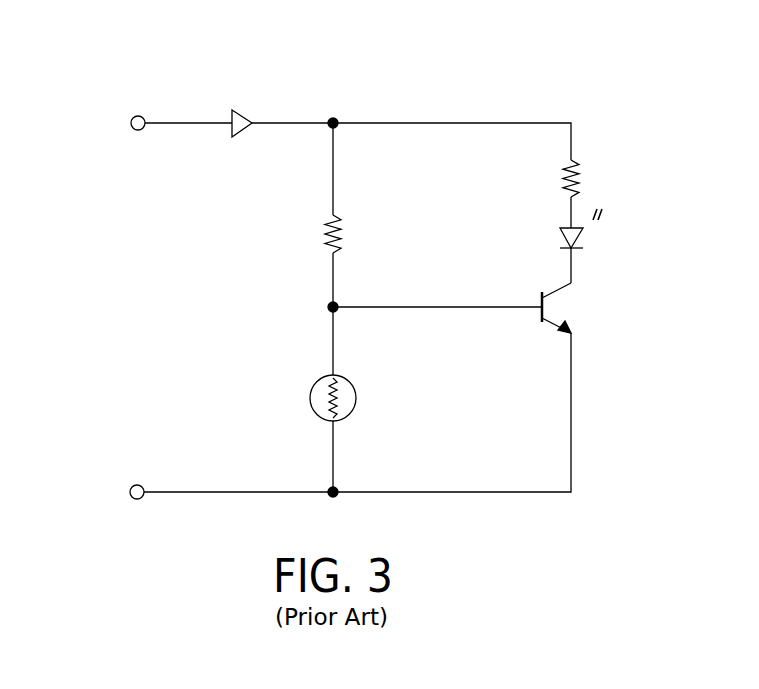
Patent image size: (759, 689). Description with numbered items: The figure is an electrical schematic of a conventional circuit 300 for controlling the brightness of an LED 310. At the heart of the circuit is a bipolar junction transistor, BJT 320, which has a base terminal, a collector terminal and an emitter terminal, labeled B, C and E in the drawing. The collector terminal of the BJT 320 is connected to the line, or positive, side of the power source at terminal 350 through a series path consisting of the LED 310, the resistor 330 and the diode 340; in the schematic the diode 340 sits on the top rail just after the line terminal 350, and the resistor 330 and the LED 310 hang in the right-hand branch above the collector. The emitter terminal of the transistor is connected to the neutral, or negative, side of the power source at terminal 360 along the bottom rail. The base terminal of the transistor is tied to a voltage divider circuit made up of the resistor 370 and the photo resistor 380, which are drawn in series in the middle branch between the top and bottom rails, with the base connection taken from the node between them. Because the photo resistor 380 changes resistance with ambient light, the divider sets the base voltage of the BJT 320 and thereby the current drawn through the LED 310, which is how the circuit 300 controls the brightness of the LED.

The conventional circuit 300 is at (497, 62).
The LED 310 is at (581, 239).
The BJT 320 is at (566, 310).
The resistor 330 is at (578, 180).
The diode 340 is at (250, 116).
The terminal 350 is at (141, 117).
The terminal 360 is at (142, 486).
The resistor 370 is at (338, 228).
The photo resistor 380 is at (356, 392).